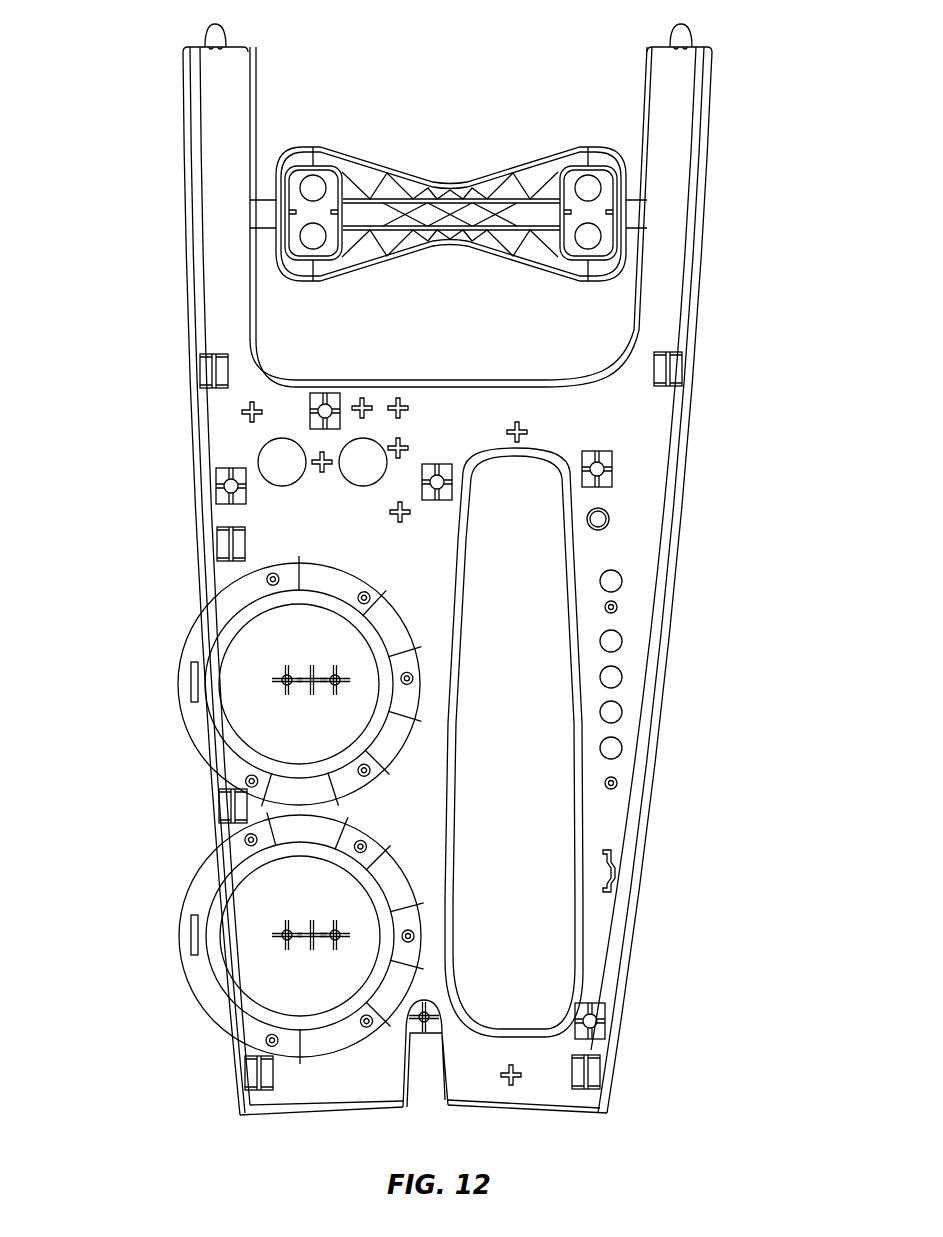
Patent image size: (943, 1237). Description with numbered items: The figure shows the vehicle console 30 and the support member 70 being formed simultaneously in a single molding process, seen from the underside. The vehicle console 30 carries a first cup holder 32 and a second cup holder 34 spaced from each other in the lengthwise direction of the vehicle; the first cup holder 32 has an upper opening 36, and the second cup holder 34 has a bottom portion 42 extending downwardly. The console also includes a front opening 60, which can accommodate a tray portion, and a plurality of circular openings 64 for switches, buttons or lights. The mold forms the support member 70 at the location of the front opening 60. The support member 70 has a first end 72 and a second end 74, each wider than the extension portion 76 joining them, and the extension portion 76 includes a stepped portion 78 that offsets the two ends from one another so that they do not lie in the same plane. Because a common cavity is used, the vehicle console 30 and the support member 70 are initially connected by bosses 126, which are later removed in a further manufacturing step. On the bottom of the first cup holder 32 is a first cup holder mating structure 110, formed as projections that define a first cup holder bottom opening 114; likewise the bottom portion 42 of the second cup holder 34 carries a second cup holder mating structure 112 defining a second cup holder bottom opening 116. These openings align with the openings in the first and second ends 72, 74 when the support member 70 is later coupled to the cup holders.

The vehicle console 30 is at (660, 727).
The first cup holder 32 is at (195, 680).
The second cup holder 34 is at (195, 940).
The upper opening 36 is at (215, 637).
The bottom portion 42 is at (232, 993).
The front opening 60 is at (595, 305).
The circular openings 64 is at (363, 456).
The support member 70 is at (377, 76).
The first end 72 is at (318, 148).
The second end 74 is at (583, 148).
The extension portion 76 is at (425, 255).
The stepped portion 78 is at (455, 232).
The first cup holder mating structure 110 is at (308, 670).
The second cup holder mating structure 112 is at (308, 950).
The first cup holder bottom opening 114 is at (335, 690).
The second cup holder bottom opening 116 is at (335, 925).
The bosses 126 is at (637, 213).